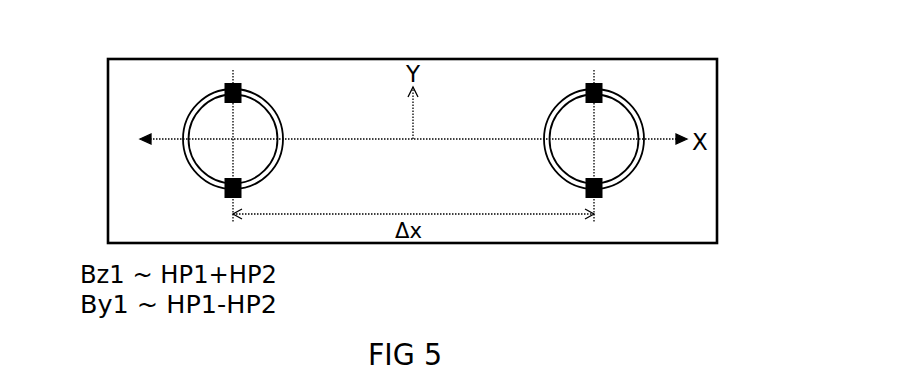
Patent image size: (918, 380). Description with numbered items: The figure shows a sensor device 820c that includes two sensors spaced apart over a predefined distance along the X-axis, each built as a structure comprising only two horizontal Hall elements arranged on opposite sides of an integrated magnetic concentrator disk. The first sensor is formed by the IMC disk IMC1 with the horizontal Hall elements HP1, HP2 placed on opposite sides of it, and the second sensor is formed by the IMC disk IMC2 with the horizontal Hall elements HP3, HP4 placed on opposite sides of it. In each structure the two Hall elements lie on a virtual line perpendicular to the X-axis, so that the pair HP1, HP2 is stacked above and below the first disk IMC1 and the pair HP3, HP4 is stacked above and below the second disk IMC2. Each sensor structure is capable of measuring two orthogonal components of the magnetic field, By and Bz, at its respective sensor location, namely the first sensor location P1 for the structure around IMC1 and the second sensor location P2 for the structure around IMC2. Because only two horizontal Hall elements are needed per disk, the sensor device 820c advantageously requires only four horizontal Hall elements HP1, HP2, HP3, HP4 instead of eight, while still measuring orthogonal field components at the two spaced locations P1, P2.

The sensor device 820c is at (717, 150).
The IMC disk IMC1 is at (190, 113).
The IMC disk IMC2 is at (556, 112).
The sensor location P1 is at (196, 176).
The sensor location P2 is at (538, 166).
The horizontal Hall element HP1 is at (259, 86).
The horizontal Hall element HP2 is at (259, 197).
The horizontal Hall element HP3 is at (626, 86).
The horizontal Hall element HP4 is at (626, 197).